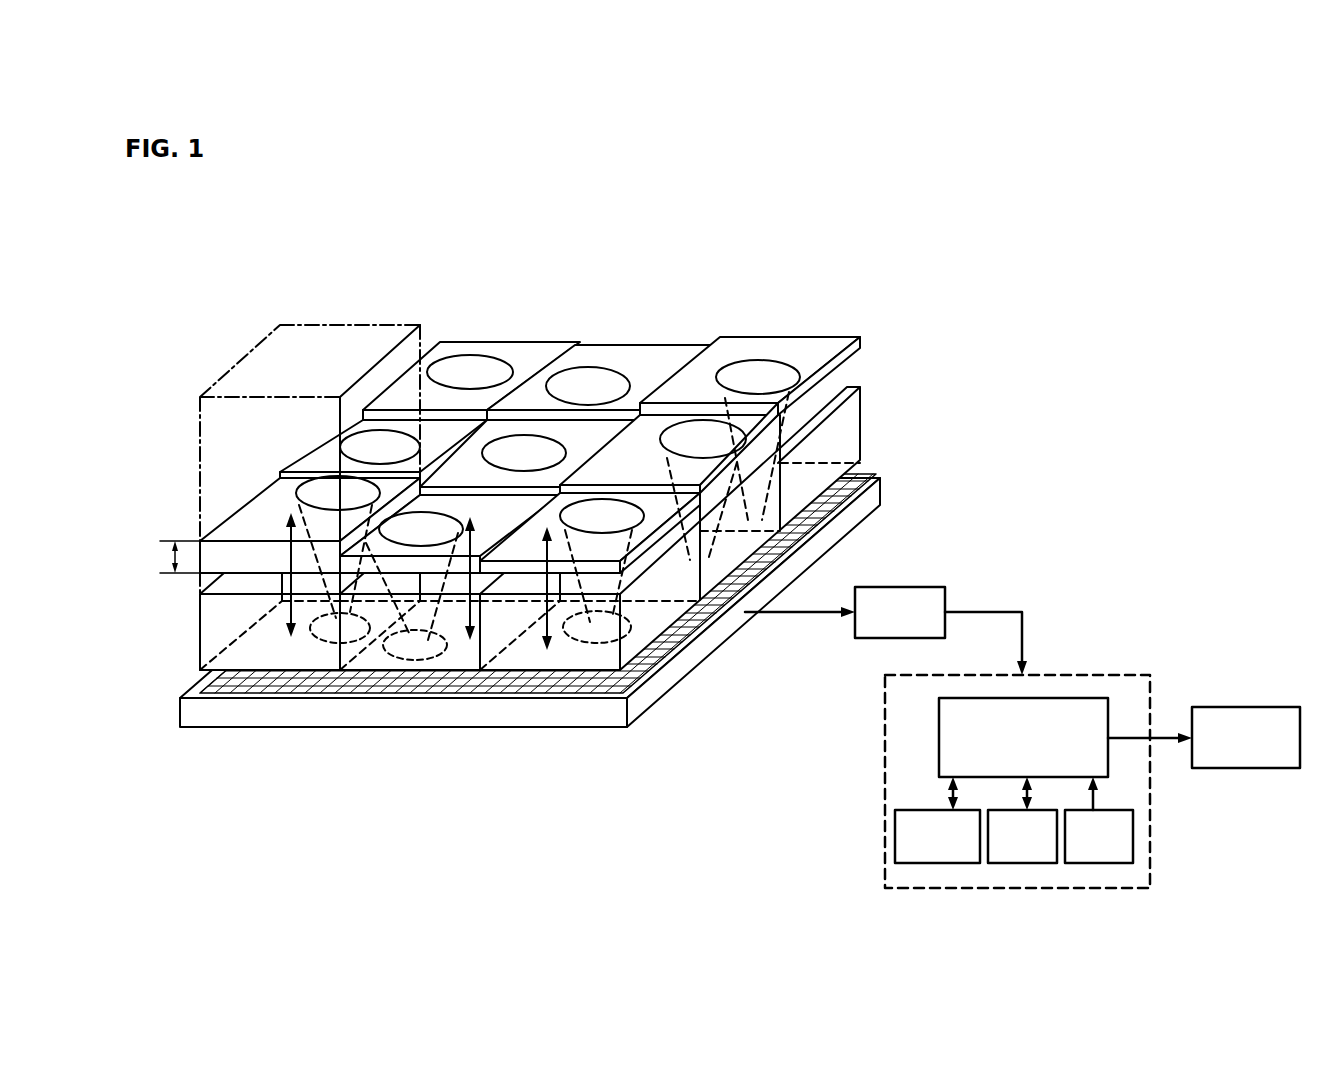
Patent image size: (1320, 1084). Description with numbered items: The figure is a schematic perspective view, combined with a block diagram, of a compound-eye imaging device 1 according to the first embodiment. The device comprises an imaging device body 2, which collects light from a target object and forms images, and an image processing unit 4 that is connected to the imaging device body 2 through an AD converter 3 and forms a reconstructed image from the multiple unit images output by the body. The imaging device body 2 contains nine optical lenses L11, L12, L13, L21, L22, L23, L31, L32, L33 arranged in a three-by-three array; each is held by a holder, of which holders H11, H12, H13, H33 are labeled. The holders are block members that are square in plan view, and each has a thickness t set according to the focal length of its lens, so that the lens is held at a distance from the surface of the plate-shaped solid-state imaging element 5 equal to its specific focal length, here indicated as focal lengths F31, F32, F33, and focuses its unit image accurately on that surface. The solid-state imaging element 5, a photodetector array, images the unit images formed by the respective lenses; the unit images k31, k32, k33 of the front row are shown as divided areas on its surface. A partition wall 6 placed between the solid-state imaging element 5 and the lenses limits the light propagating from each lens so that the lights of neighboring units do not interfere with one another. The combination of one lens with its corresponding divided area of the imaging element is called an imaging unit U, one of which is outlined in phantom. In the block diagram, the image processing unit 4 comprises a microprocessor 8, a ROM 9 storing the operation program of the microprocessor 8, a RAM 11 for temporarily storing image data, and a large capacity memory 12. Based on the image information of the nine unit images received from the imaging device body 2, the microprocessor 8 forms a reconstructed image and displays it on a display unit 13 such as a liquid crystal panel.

The compound-eye imaging device 1 is at (806, 163).
The imaging device body 2 is at (741, 262).
The AD converter 3 is at (927, 587).
The image processing unit 4 is at (1115, 675).
The solid-state imaging element 5 is at (875, 498).
The partition wall 6 is at (845, 421).
The microprocessor 8 is at (939, 738).
The ROM 9 is at (1133, 827).
The RAM 11 is at (1030, 863).
The large capacity memory 12 is at (945, 863).
The display unit 13 is at (1247, 707).
The imaging unit U is at (233, 367).
The thickness t is at (161, 557).
The optical lens L11 is at (473, 367).
The optical lens L12 is at (602, 377).
The optical lens L13 is at (763, 368).
The optical lens L21 is at (362, 448).
The optical lens L22 is at (530, 457).
The optical lens L23 is at (669, 448).
The optical lens L31 is at (315, 495).
The optical lens L32 is at (430, 527).
The optical lens L33 is at (612, 510).
The holder H11 is at (542, 348).
The holder H12 is at (673, 355).
The holder H13 is at (825, 357).
The holder H33 is at (530, 567).
The focal length F31 is at (287, 608).
The focal length F32 is at (467, 608).
The focal length F33 is at (547, 622).
The unit image k31 is at (340, 645).
The unit image k32 is at (386, 655).
The unit image k33 is at (650, 668).